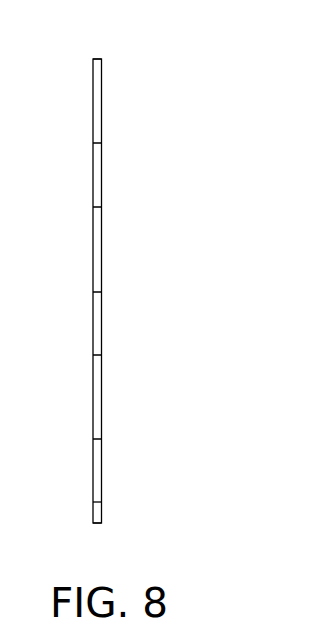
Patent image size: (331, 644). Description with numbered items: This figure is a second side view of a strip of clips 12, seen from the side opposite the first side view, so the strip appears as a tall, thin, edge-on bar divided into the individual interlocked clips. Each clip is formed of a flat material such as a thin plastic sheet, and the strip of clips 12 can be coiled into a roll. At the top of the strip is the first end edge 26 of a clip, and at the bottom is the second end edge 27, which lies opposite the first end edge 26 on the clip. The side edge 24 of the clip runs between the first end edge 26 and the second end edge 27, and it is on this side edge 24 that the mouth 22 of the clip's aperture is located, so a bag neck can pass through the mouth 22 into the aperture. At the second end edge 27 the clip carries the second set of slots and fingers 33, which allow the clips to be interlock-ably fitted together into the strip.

The strip of clips 12 is at (165, 238).
The mouth 22 is at (102, 293).
The side edge 24 is at (97, 390).
The first end edge 26 is at (97, 59).
The second end edge 27 is at (93, 502).
The second set of slots and fingers 33 is at (97, 514).